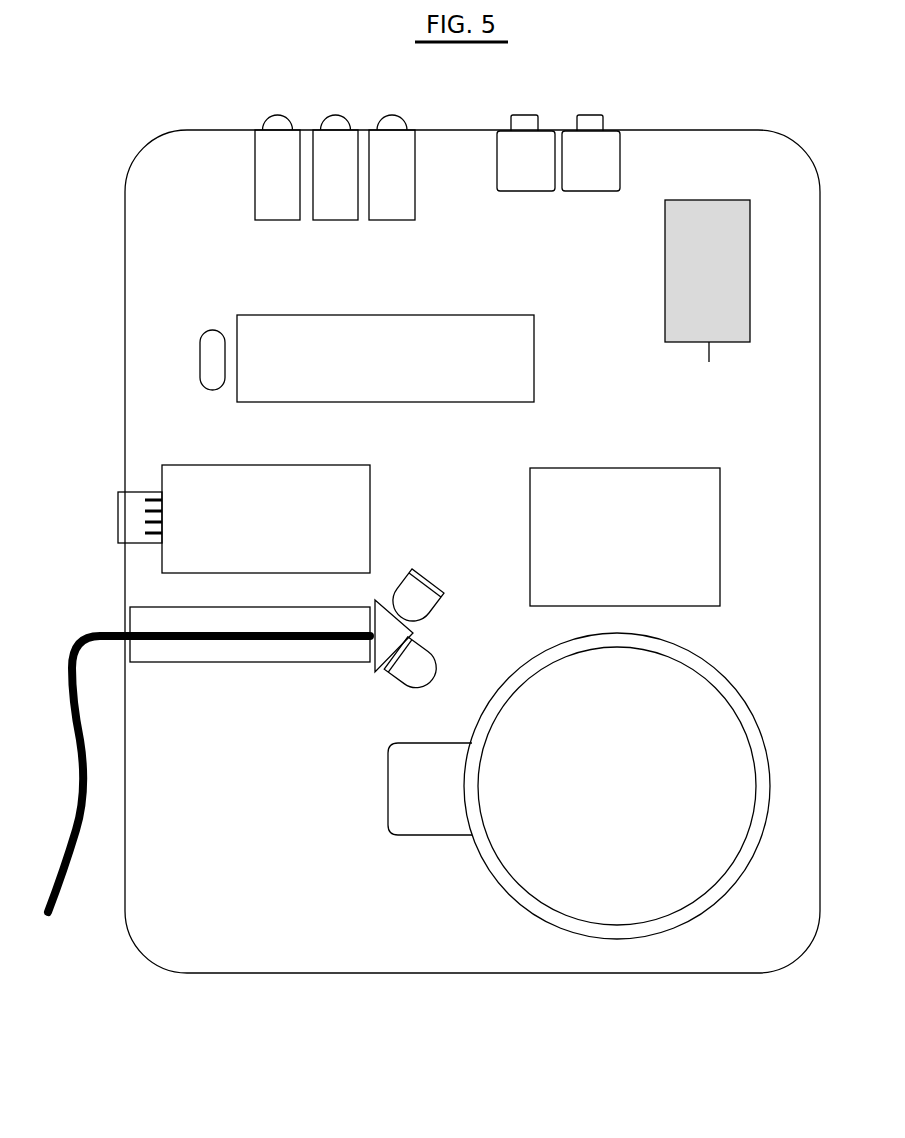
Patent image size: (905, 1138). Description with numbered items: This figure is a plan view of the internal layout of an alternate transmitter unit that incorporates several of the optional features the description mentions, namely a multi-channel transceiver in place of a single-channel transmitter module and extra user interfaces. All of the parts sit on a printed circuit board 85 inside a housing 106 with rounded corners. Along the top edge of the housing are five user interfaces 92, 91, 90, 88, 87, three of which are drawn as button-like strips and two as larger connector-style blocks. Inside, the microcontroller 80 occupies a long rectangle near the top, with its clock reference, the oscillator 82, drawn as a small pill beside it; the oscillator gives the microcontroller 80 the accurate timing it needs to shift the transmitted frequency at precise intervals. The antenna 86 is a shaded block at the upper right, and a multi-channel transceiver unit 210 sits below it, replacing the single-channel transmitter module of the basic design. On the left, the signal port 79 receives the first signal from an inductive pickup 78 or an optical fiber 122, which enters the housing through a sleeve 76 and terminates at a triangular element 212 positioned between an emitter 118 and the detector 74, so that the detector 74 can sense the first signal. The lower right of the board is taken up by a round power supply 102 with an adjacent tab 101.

The housing 106 is at (462, 551).
The user interface 92 is at (277, 181).
The user interface 91 is at (335, 181).
The user interface 90 is at (392, 181).
The user interface 88 is at (526, 166).
The user interface 87 is at (591, 166).
The antenna 86 is at (707, 281).
The oscillator 82 is at (212, 349).
The MCU 80 is at (385, 358).
The PCB 85 is at (472, 551).
The signal port 79 is at (244, 519).
The multi-channel transceiver unit 210 is at (625, 537).
The sleeve 76 is at (250, 635).
The inductive pickup 78 is at (202, 774).
The optical fiber 122 is at (202, 774).
The beam splitter 212 is at (377, 645).
The emitter 118 is at (420, 594).
The detector 74 is at (414, 666).
The power supply 102 is at (617, 786).
The battery tab 101 is at (430, 803).